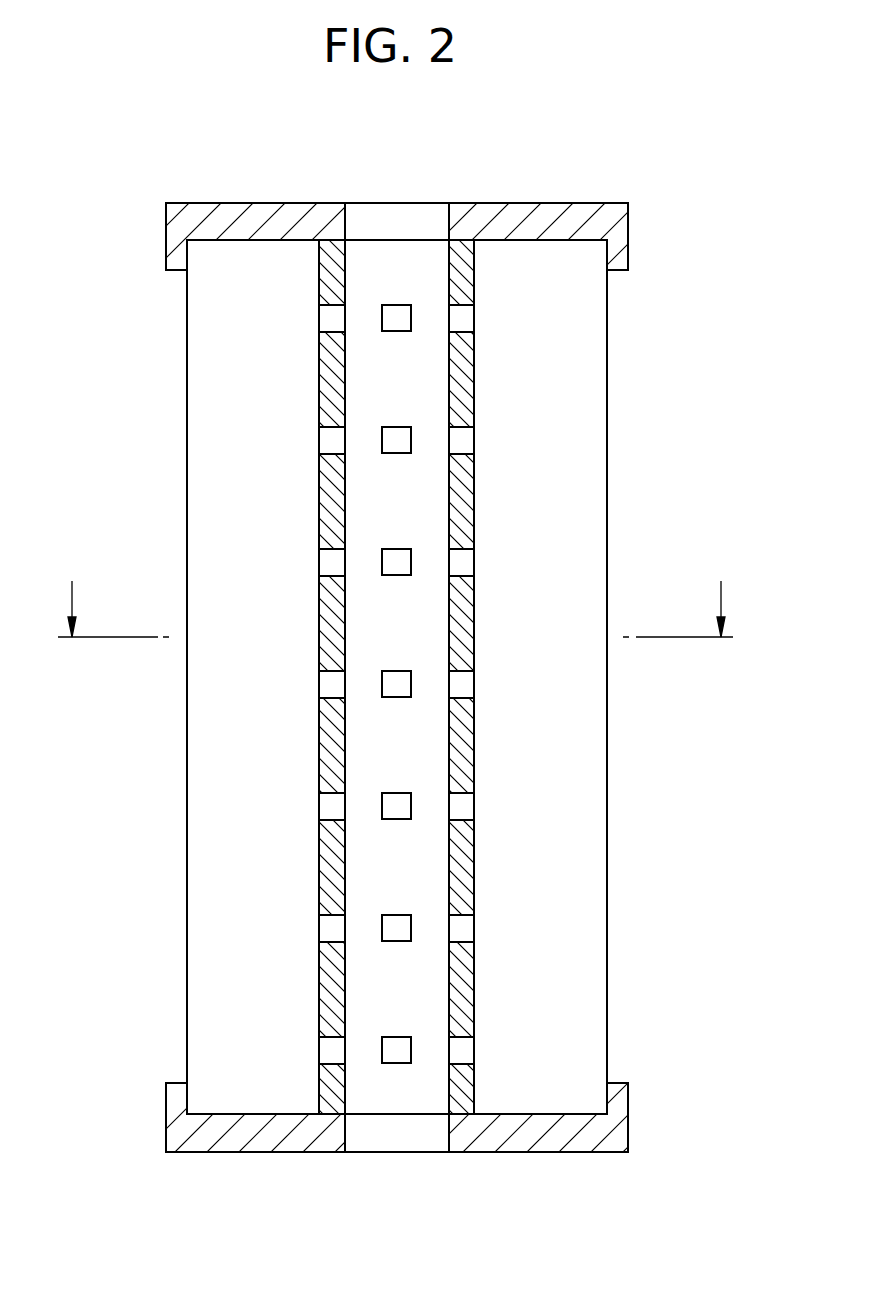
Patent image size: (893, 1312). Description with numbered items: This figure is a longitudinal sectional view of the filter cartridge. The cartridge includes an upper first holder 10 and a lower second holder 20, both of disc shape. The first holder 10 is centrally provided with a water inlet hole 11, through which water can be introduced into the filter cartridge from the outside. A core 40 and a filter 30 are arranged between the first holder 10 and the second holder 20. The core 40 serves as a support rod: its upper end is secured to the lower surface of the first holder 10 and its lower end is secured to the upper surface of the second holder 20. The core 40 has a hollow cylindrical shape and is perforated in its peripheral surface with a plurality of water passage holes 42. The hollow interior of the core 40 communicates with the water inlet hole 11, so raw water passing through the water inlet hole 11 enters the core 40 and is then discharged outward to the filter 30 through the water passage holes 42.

The first holder 10 is at (172, 233).
The water inlet hole 11 is at (411, 218).
The second holder 20 is at (170, 1111).
The filter 30 is at (203, 431).
The core 40 is at (327, 373).
The water passage holes 42 is at (480, 1051).